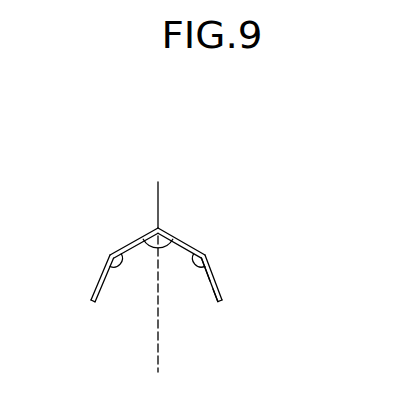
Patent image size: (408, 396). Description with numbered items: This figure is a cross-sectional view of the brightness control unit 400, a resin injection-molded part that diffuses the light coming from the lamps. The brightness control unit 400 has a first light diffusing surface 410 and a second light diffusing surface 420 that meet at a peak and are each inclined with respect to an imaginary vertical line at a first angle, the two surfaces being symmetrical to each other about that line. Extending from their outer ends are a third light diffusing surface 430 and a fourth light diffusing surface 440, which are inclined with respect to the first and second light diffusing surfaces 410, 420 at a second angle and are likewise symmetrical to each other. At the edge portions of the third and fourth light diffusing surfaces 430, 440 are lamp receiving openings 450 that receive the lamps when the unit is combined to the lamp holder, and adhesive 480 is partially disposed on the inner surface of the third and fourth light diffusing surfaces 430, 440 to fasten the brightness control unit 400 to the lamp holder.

The brightness control unit 400 is at (202, 264).
The first light diffusing surface 410 is at (134, 241).
The second light diffusing surface 420 is at (191, 246).
The third light diffusing surface 430 is at (105, 268).
The fourth light diffusing surface 440 is at (214, 277).
The lamp receiving opening 450 is at (222, 298).
The adhesive 480 is at (208, 282).